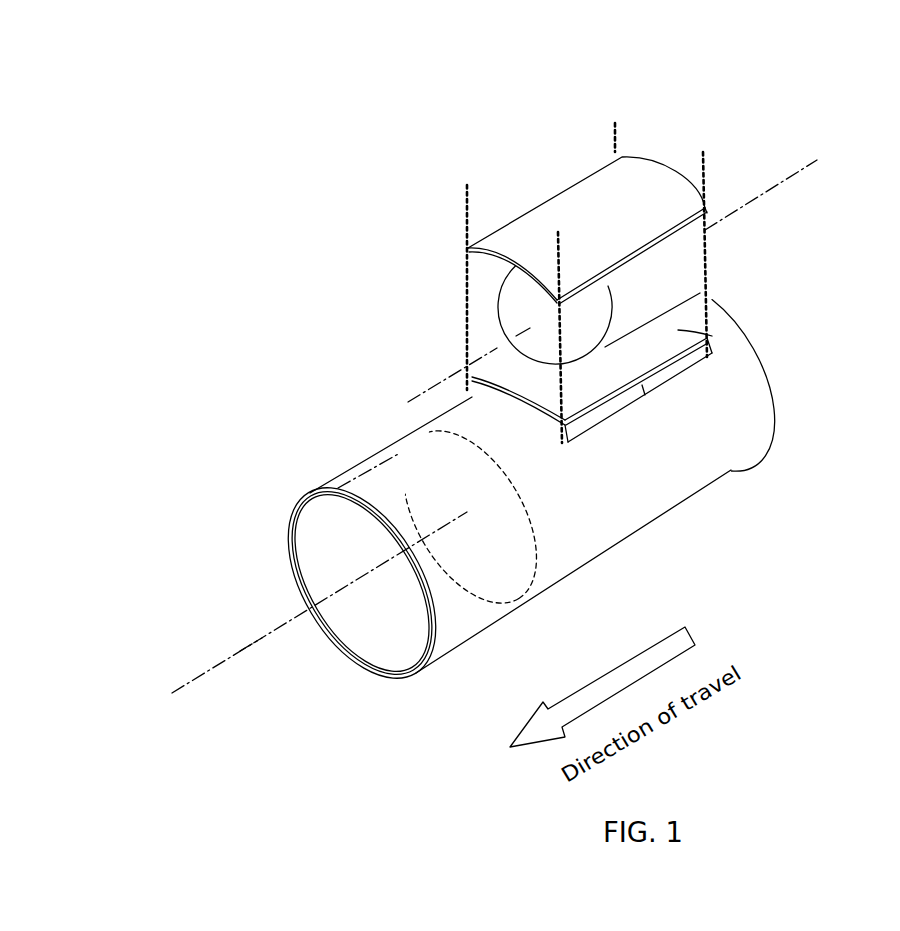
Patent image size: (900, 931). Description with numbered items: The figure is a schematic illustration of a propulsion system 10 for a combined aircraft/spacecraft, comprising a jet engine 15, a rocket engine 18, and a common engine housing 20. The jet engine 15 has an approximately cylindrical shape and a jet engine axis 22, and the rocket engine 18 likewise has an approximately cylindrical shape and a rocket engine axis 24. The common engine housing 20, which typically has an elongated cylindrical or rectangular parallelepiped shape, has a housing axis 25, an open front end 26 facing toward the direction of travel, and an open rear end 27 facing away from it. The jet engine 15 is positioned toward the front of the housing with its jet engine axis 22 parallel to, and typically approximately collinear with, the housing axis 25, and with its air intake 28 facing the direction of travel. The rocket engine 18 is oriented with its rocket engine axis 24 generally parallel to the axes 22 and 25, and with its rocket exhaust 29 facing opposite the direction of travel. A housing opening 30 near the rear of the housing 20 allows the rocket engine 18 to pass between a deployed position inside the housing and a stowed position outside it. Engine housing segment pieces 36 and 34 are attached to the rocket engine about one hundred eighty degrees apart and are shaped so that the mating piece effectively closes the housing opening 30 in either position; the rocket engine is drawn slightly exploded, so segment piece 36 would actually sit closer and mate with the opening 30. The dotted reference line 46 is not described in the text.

The propulsion system 10 is at (152, 100).
The jet engine 15 is at (390, 483).
The rocket engine 18 is at (497, 295).
The common engine housing 20 is at (561, 535).
The jet engine axis 22 is at (175, 688).
The rocket engine axis 24 is at (764, 195).
The housing axis 25 is at (257, 638).
The open front end 26 is at (400, 677).
The open rear end 27 is at (715, 338).
The air intake 28 is at (350, 663).
The rocket exhaust 29 is at (708, 262).
The housing opening 30 is at (627, 395).
The engine housing segment piece 34 is at (597, 173).
The engine housing segment piece 36 is at (750, 381).
The front vertical plane 46 is at (464, 190).